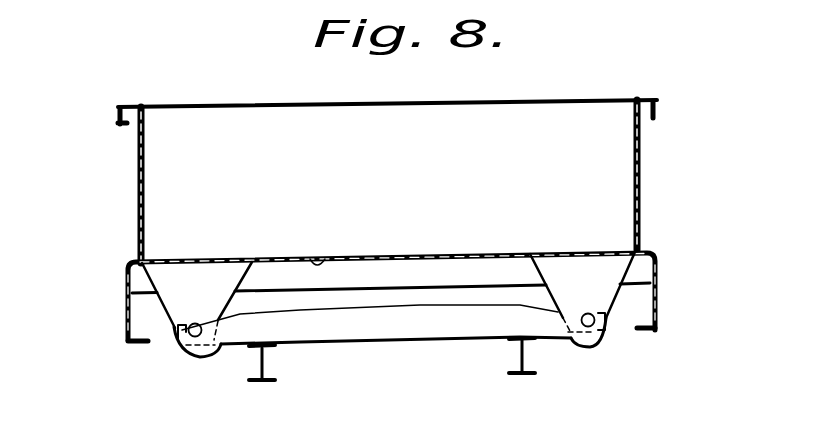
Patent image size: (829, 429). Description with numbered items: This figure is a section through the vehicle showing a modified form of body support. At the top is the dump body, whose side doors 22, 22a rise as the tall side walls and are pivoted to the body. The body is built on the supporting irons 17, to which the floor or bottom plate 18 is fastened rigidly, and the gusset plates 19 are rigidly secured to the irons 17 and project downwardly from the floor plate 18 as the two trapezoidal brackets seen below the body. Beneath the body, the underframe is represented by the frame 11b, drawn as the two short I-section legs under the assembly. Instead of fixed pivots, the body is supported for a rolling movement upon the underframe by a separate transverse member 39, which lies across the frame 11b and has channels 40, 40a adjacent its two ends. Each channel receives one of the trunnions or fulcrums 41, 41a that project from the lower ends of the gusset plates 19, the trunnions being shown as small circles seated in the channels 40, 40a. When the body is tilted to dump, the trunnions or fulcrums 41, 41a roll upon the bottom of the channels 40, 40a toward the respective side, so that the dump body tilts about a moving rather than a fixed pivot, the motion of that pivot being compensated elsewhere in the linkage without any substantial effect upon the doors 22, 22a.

The door 22 is at (137, 181).
The door 22a is at (641, 156).
The floor or bottom plate 18 is at (337, 244).
The gusset plate 19 is at (176, 268).
The supporting iron 17 is at (352, 289).
The transverse member 39 is at (376, 324).
The channel 40 is at (176, 333).
The channel 40a is at (606, 330).
The trunnion or fulcrum 41 is at (203, 307).
The trunnion or fulcrum 41a is at (597, 297).
The frame 11b is at (547, 374).